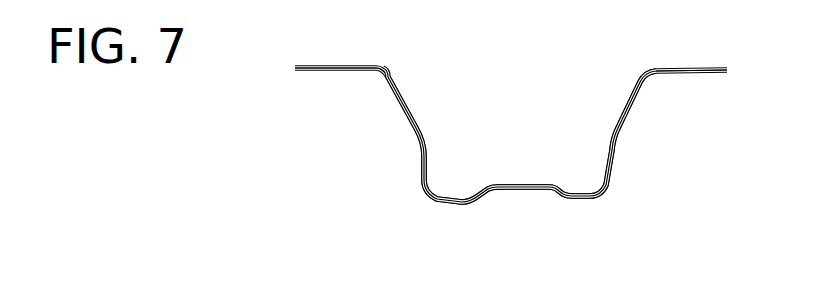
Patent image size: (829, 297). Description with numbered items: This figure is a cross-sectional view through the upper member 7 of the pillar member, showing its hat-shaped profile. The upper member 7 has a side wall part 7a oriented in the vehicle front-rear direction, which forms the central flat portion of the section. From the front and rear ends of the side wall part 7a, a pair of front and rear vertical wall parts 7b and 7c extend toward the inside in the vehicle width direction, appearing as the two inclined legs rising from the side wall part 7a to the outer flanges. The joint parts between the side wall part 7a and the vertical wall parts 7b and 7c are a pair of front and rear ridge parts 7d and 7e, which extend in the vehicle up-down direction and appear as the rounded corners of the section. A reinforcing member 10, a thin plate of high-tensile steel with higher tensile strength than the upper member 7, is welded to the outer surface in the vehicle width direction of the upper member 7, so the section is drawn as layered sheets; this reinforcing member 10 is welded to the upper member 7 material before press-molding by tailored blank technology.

The upper member 7 is at (398, 85).
The reinforcing member 10 is at (483, 197).
The side wall part 7a is at (521, 183).
The front vertical wall part 7b is at (615, 128).
The rear vertical wall part 7c is at (418, 130).
The front ridge part 7d is at (597, 195).
The rear ridge part 7e is at (422, 187).